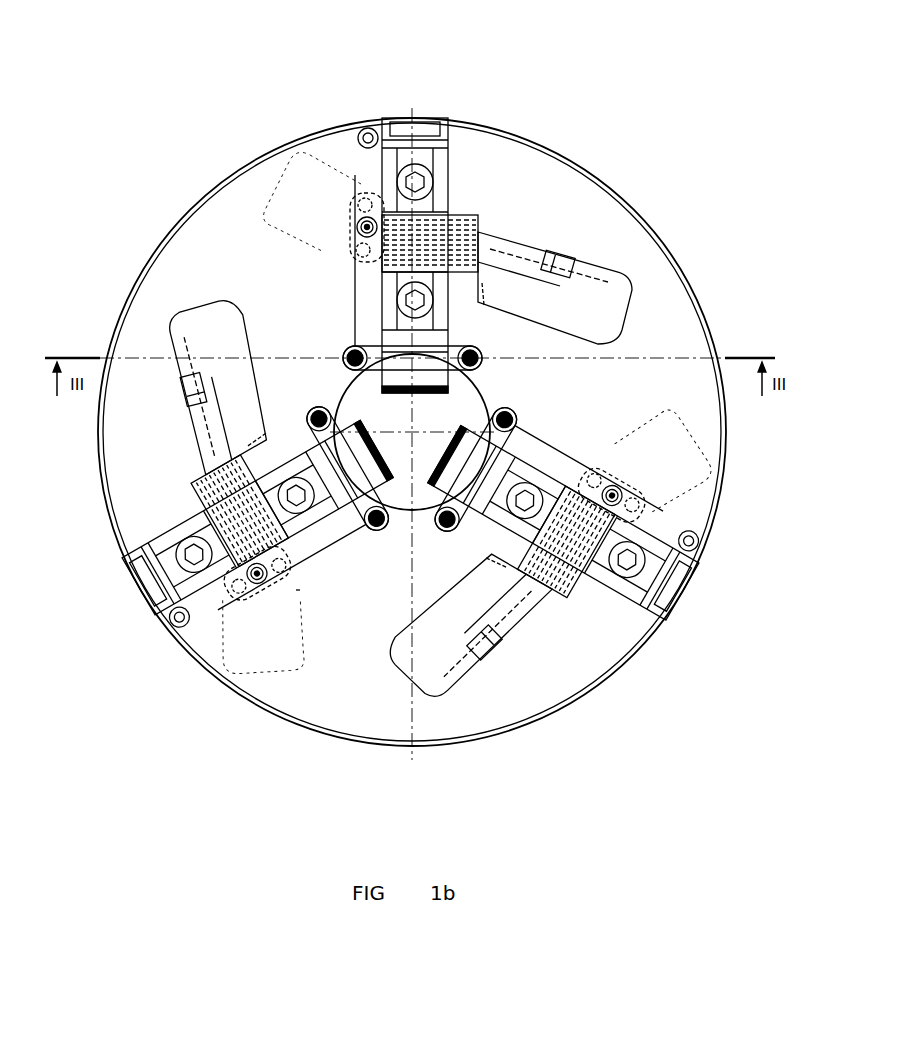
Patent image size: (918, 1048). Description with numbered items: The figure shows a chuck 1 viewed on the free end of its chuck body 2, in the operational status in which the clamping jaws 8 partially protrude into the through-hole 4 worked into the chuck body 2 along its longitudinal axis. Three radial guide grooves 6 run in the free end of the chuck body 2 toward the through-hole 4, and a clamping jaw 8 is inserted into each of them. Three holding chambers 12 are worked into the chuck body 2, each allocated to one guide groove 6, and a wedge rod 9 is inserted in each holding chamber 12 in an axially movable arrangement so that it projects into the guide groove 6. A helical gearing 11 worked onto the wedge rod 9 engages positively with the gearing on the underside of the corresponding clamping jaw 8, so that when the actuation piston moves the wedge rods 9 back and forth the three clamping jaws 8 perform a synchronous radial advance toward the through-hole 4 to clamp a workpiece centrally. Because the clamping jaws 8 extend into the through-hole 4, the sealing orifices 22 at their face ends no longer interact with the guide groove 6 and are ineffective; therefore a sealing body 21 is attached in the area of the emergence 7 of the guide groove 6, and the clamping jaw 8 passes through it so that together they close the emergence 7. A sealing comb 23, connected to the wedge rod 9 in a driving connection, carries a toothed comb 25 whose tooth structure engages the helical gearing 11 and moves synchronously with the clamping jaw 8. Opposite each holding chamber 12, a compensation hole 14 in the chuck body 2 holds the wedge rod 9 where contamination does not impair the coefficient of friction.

The chuck 1 is at (553, 145).
The chuck body 2 is at (178, 228).
The through-hole 4 is at (345, 390).
The guide groove 6 is at (385, 120).
The emergence of the guide groove 7 is at (440, 343).
The clamping jaw 8 is at (448, 163).
The wedge rod 9 is at (583, 262).
The helical gearing 11 is at (465, 225).
The holding chamber 12 is at (272, 197).
The compensation hole 14 is at (627, 312).
The sealing body 21 is at (350, 210).
The sealing orifice 22 is at (432, 118).
The sealing comb 23 is at (366, 129).
The toothed comb 25 is at (298, 590).